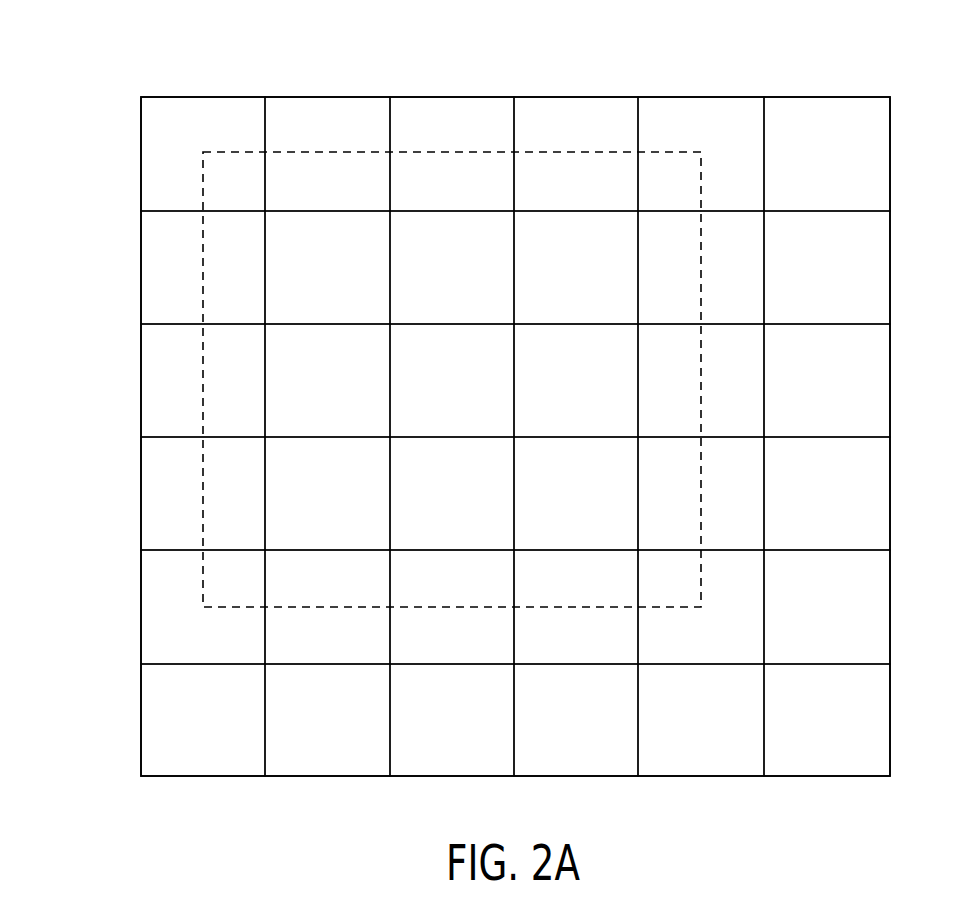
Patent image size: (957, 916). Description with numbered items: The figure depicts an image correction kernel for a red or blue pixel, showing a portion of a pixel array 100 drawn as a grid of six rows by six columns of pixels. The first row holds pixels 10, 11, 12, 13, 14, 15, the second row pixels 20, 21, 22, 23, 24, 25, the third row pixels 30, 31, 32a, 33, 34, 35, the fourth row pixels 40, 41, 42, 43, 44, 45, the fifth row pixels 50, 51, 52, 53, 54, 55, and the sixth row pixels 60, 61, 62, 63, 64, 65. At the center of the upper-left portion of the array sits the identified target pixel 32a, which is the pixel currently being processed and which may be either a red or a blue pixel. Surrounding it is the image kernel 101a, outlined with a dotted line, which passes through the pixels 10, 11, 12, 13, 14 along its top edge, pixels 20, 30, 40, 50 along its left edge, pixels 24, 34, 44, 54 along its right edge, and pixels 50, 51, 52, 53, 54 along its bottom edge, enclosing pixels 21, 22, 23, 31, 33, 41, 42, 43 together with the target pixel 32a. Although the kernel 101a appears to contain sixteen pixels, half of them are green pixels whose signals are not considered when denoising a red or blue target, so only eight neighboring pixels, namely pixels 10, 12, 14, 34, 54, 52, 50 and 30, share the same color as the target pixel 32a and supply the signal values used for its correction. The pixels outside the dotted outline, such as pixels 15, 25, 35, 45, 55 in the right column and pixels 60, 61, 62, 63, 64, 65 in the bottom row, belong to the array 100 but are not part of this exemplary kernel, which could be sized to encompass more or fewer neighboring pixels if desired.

The pixel array 100 is at (74, 78).
The image correction kernel 101a is at (202, 338).
The pixel 10 is at (203, 154).
The pixel 11 is at (327, 154).
The pixel 12 is at (452, 154).
The pixel 13 is at (576, 154).
The pixel 14 is at (701, 154).
The pixel 15 is at (827, 154).
The pixel 20 is at (203, 267).
The pixel 21 is at (327, 267).
The pixel 22 is at (452, 267).
The pixel 23 is at (576, 267).
The pixel 24 is at (701, 267).
The pixel 25 is at (827, 267).
The pixel 30 is at (203, 380).
The pixel 31 is at (327, 380).
The identified target pixel 32a is at (437, 393).
The pixel 33 is at (576, 380).
The pixel 34 is at (701, 380).
The pixel 35 is at (827, 380).
The pixel 40 is at (203, 493).
The pixel 41 is at (327, 493).
The pixel 42 is at (452, 493).
The pixel 43 is at (576, 493).
The pixel 44 is at (701, 493).
The pixel 45 is at (827, 493).
The pixel 50 is at (203, 607).
The pixel 51 is at (327, 607).
The pixel 52 is at (452, 607).
The pixel 53 is at (576, 607).
The pixel 54 is at (701, 607).
The pixel 55 is at (827, 607).
The pixel 60 is at (203, 720).
The pixel 61 is at (327, 720).
The pixel 62 is at (452, 720).
The pixel 63 is at (576, 720).
The pixel 64 is at (701, 720).
The pixel 65 is at (827, 720).